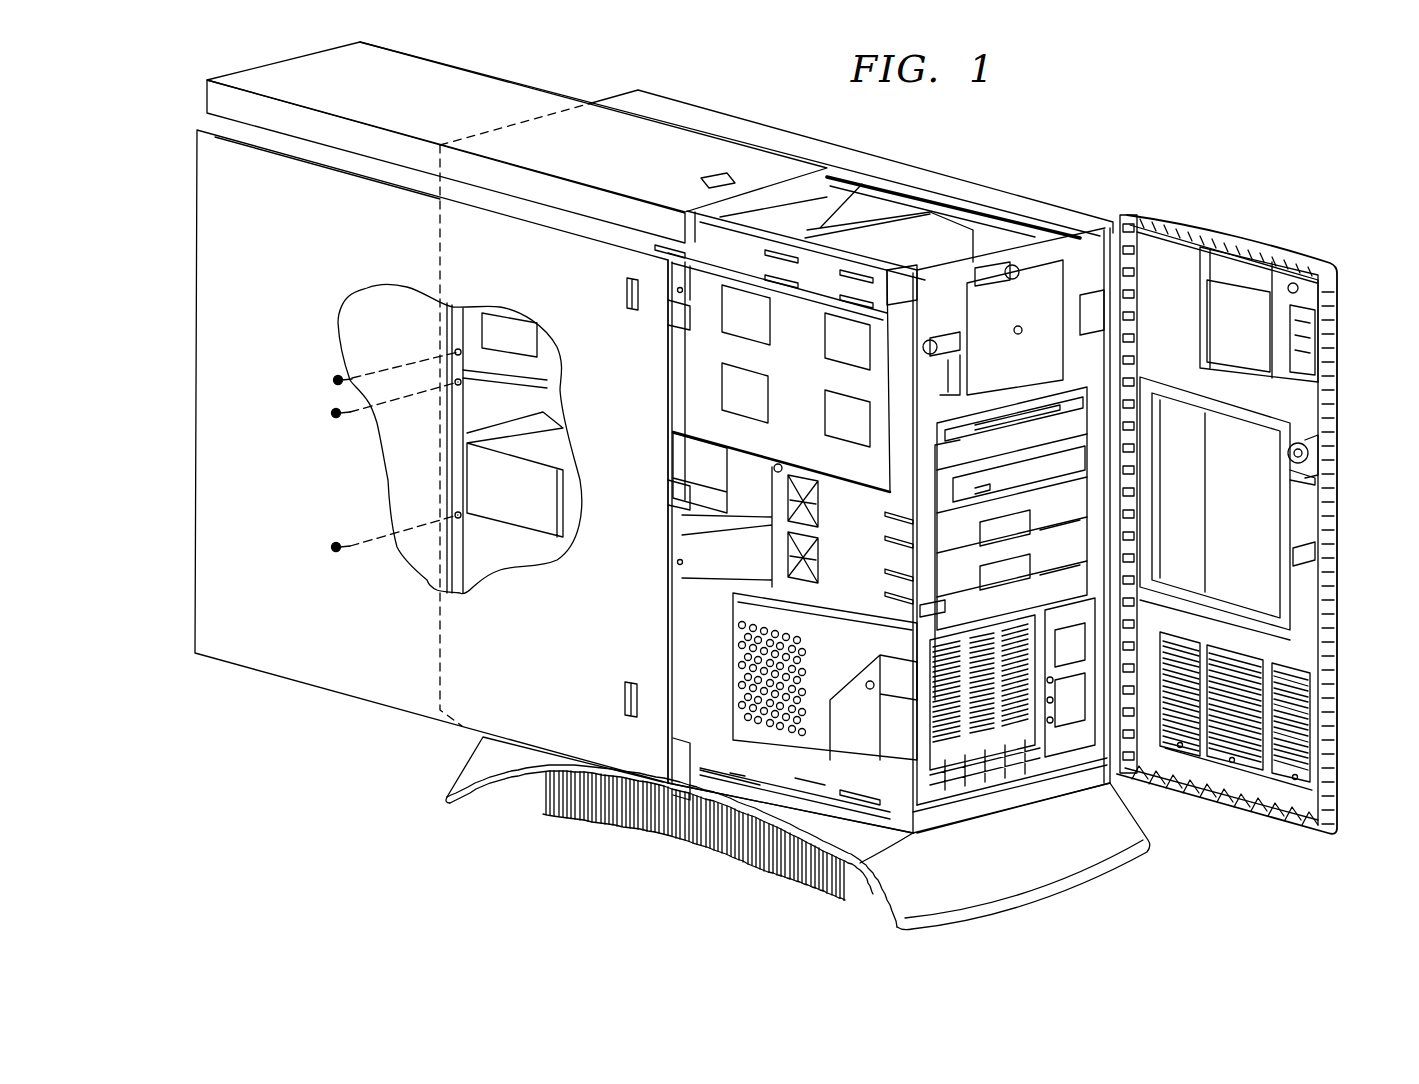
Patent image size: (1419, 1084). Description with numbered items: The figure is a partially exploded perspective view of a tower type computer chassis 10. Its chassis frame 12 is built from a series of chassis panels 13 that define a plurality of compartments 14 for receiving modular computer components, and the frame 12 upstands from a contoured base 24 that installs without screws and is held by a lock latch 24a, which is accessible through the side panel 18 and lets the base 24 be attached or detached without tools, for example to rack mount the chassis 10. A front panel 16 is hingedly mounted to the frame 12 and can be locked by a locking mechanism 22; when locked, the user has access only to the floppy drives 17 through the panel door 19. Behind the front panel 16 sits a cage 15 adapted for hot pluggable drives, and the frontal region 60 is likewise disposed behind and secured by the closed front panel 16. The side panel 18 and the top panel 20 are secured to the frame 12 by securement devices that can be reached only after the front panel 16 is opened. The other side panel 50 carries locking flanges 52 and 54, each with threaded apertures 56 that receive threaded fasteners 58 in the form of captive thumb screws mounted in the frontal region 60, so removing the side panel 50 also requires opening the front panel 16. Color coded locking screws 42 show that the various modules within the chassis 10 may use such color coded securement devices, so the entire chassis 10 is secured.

The computer chassis 10 is at (1308, 169).
The chassis frame 12 is at (961, 212).
The chassis panels 13 is at (196, 361).
The compartments 14 is at (1013, 770).
The cage 15 is at (950, 787).
The front panel 16 is at (1337, 356).
The floppy drives 17 is at (1073, 407).
The side panel 18 is at (283, 286).
The panel door 19 is at (1250, 537).
The top panel 20 is at (590, 159).
The locking mechanism 22 is at (1318, 437).
The base 24 is at (660, 835).
The lock latch 24a is at (777, 774).
The color coded locking screws 42 is at (340, 553).
The side panel 50 is at (500, 633).
The locking flange 52 is at (673, 333).
The locking flange 54 is at (677, 508).
The threaded apertures 56 is at (677, 290).
The threaded fasteners 58 is at (927, 613).
The frontal region 60 is at (1090, 262).